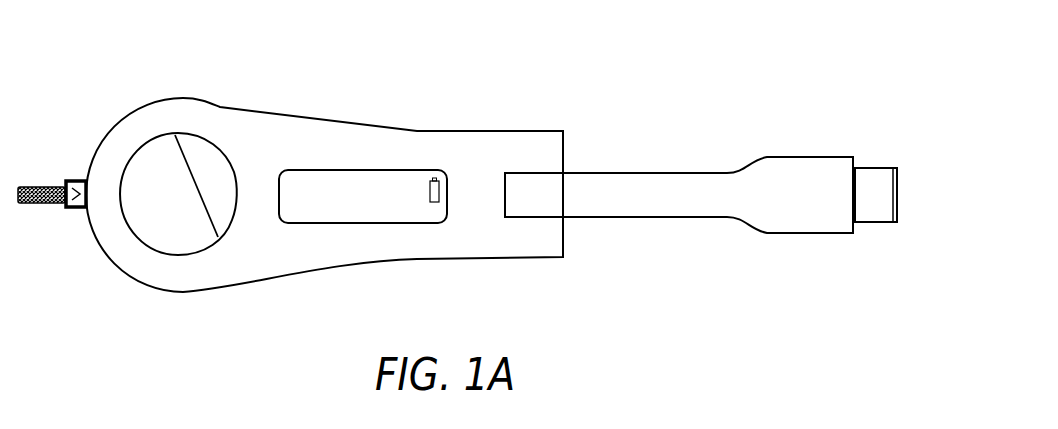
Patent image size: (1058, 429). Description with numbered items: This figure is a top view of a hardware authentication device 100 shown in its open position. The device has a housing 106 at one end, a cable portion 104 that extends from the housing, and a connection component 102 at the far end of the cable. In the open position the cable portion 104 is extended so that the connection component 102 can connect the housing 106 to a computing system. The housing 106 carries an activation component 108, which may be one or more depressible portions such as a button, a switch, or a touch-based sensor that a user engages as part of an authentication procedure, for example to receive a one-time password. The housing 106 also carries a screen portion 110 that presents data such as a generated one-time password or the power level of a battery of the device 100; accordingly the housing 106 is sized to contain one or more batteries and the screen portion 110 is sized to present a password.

The hardware authentication device 100 is at (476, 156).
The connection component 102 is at (860, 168).
The cable portion 104 is at (598, 173).
The housing 106 is at (220, 108).
The activation component 108 is at (185, 216).
The screen portion 110 is at (410, 169).